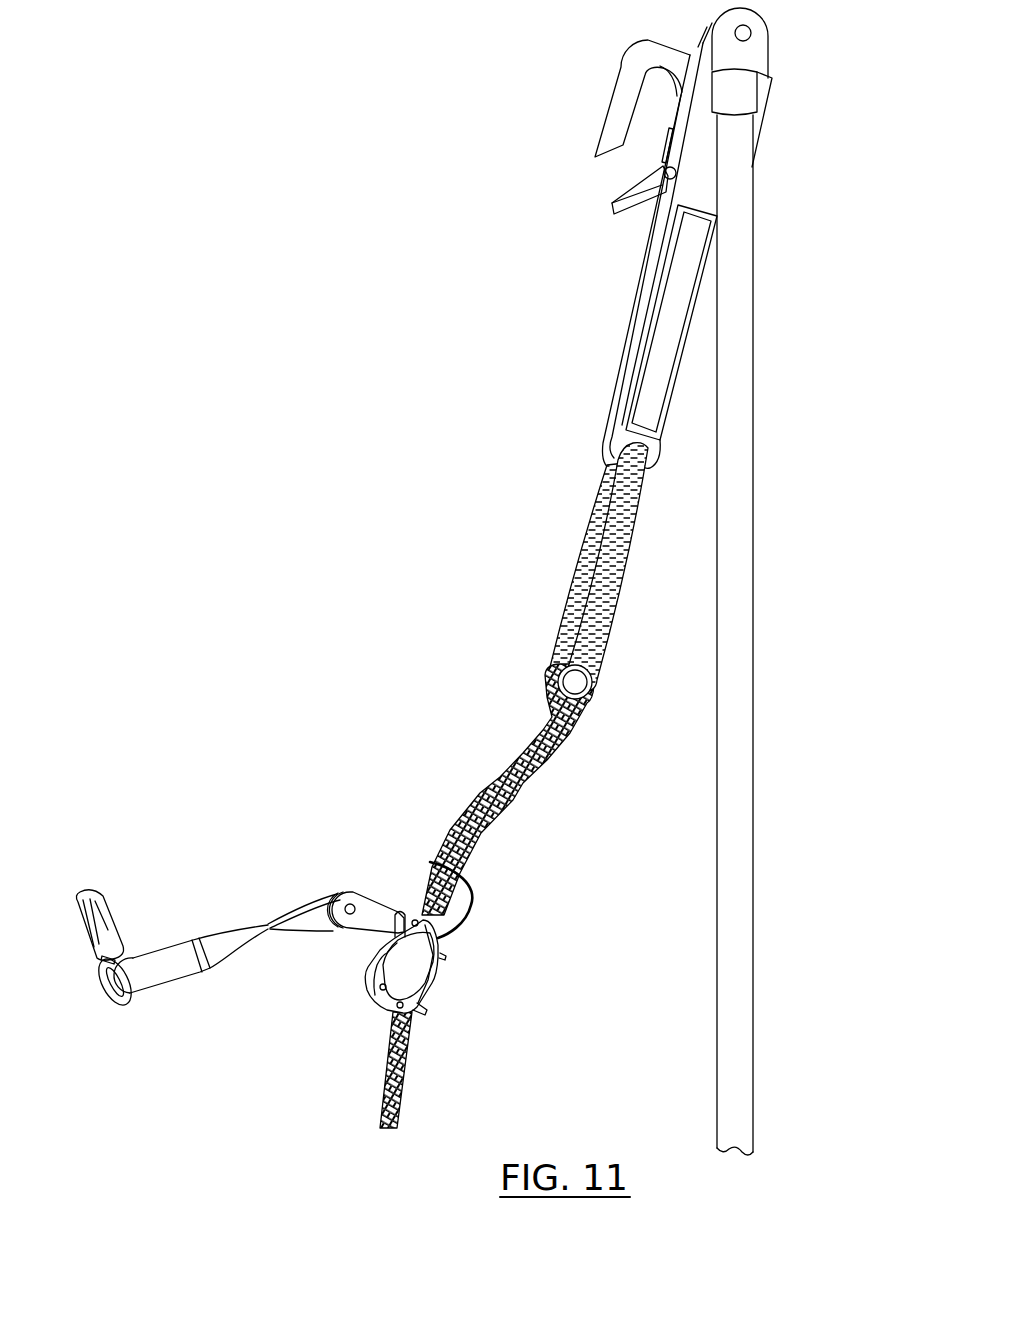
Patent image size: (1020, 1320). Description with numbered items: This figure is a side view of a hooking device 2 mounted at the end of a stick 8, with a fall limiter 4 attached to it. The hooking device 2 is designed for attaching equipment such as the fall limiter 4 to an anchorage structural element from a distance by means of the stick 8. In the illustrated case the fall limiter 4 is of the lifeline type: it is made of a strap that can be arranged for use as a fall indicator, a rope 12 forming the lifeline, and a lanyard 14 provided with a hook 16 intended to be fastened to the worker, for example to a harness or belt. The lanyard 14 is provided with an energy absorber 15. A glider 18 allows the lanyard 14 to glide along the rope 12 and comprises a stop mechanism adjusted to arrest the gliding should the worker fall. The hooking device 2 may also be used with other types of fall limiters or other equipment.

The hooking device 2 is at (571, 239).
The fall limiter 4 is at (371, 616).
The stick 8 is at (743, 485).
The rope 12 is at (493, 777).
The lanyard 14 is at (298, 906).
The energy absorber 15 is at (167, 957).
The hook 16 is at (85, 890).
The glider 18 is at (380, 993).